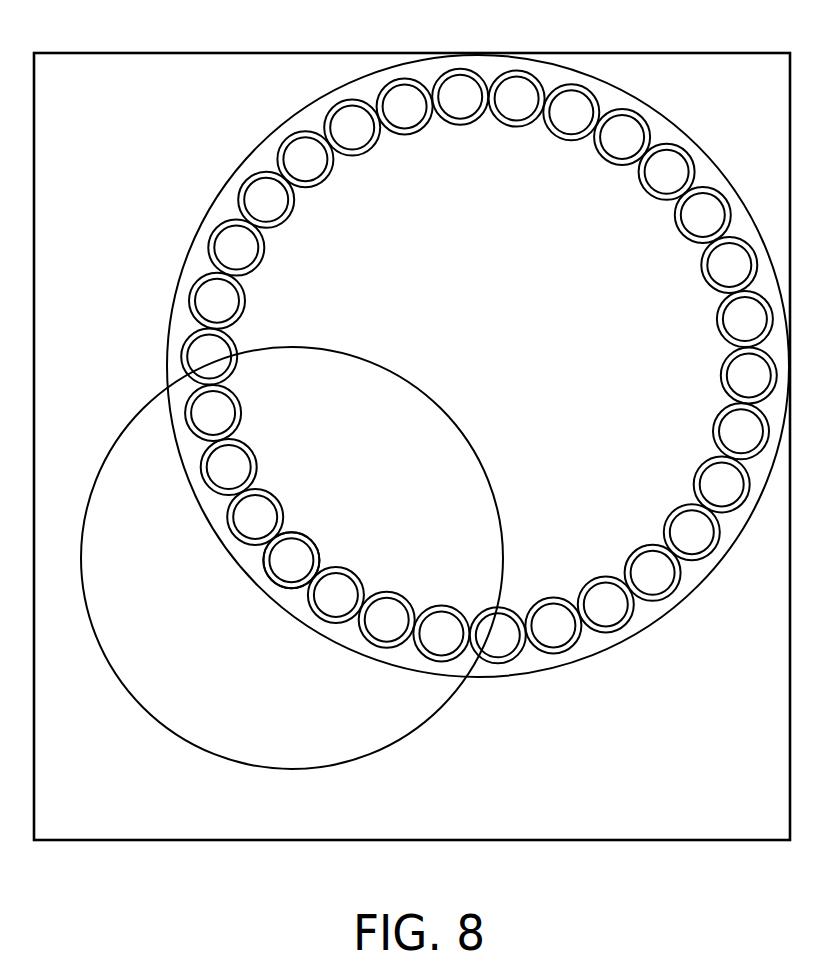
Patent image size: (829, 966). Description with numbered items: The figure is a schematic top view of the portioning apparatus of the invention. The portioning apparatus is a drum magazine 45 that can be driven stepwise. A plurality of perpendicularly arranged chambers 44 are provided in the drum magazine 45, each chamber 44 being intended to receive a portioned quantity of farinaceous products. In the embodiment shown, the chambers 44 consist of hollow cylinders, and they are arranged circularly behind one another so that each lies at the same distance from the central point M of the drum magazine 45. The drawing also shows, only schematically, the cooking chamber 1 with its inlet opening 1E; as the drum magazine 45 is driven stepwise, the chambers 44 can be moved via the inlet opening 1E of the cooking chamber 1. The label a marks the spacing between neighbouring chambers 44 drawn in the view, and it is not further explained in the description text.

The chambers 44 is at (400, 93).
The drum magazine 45 is at (683, 636).
The cooking chamber 1 is at (165, 629).
The inlet opening 1E is at (283, 587).
The central point M is at (255, 517).
The angle a is at (347, 475).